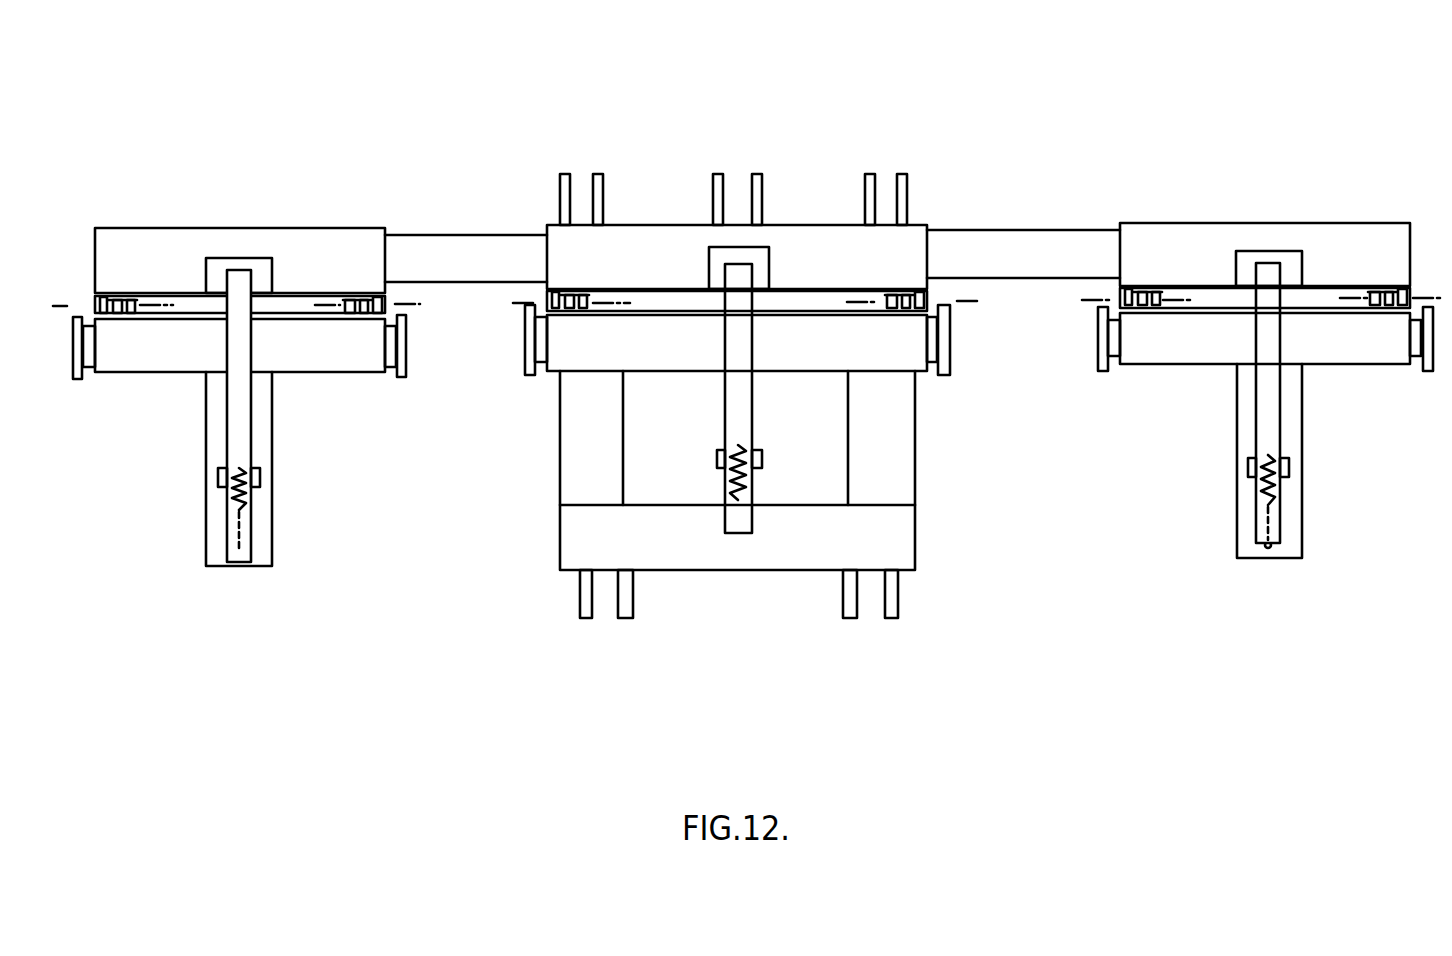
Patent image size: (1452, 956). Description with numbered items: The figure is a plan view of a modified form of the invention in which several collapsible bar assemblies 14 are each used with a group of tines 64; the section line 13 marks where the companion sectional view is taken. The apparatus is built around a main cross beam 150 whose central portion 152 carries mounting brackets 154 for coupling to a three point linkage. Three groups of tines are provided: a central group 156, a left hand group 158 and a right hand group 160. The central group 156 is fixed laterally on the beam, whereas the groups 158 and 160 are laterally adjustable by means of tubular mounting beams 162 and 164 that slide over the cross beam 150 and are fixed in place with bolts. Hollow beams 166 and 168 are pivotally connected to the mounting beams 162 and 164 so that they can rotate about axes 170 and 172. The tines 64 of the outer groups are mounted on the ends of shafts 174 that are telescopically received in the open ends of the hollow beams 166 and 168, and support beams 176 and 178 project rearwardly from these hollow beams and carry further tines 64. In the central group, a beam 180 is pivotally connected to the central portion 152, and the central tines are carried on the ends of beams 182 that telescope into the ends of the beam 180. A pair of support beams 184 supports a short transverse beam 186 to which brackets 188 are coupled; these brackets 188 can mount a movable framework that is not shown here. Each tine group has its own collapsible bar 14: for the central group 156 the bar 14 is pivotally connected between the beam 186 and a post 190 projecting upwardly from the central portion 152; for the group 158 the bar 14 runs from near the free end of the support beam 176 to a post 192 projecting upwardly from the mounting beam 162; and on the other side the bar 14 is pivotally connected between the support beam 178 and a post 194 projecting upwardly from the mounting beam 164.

The section line 13- 13 is at (427, 688).
The collapsible bar assembly 14 is at (232, 443).
The tine 64 is at (73, 380).
The main cross beam 150 is at (432, 234).
The central portion 152 is at (737, 221).
The mounting bracket 154 is at (605, 162).
The central group of tines 156 is at (714, 384).
The left hand group of tines 158 is at (742, 368).
The right hand group of tines 160 is at (1235, 366).
The tubular mounting beam 162 is at (307, 253).
The tubular mounting beam 164 is at (1140, 250).
The hollow beam 166 is at (139, 354).
The hollow beam 168 is at (1355, 345).
The axis 170 is at (88, 307).
The axis 172 is at (1422, 303).
The shaft 174 is at (84, 303).
The support beam 176 is at (207, 507).
The support beam 178 is at (1237, 513).
The beam 180 is at (680, 347).
The beam 182 is at (541, 367).
The support beam 184 is at (582, 472).
The short transverse beam 186 is at (583, 542).
The bracket 188 is at (572, 608).
The post 190 is at (762, 258).
The post 192 is at (220, 268).
The post 194 is at (1288, 257).